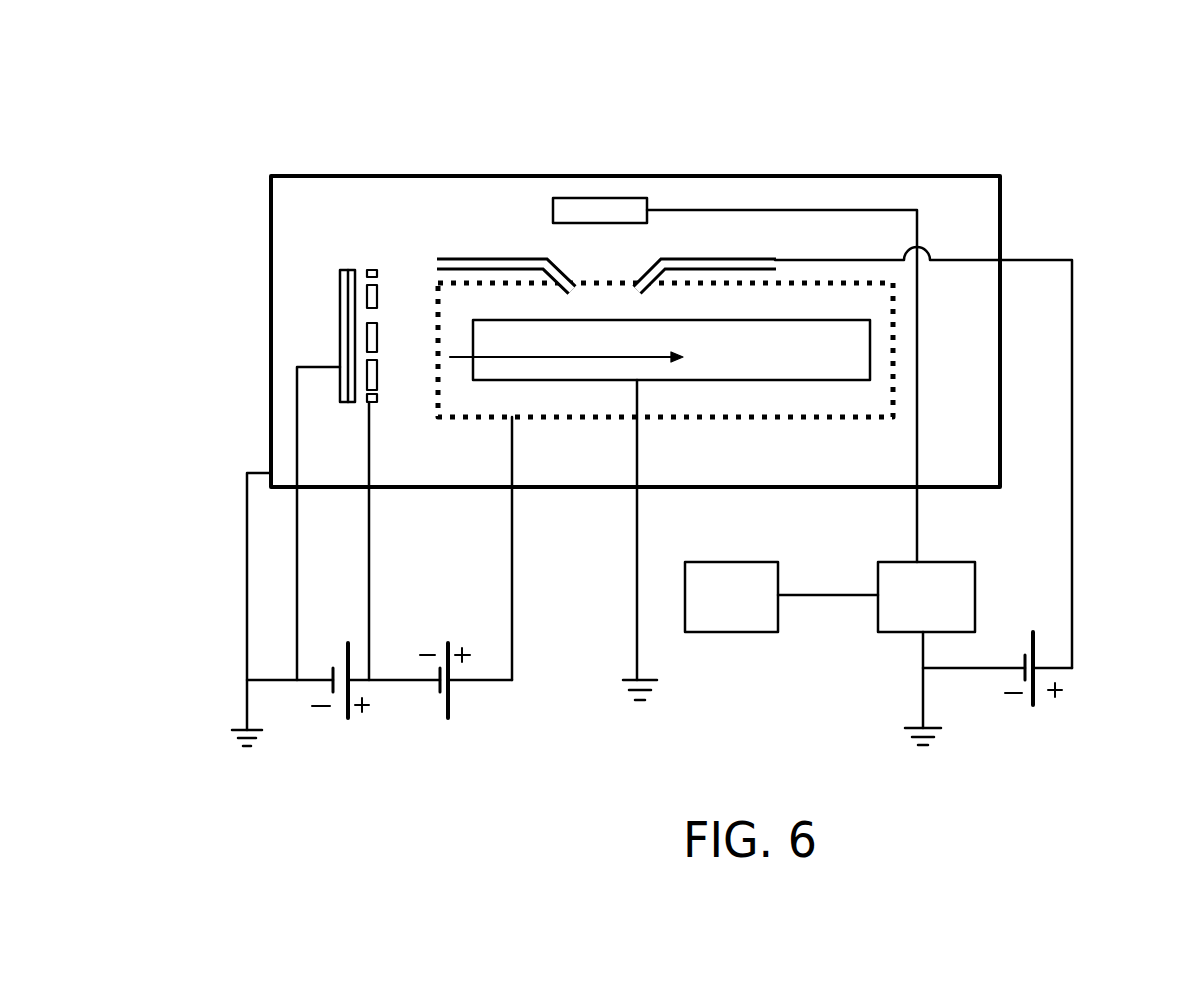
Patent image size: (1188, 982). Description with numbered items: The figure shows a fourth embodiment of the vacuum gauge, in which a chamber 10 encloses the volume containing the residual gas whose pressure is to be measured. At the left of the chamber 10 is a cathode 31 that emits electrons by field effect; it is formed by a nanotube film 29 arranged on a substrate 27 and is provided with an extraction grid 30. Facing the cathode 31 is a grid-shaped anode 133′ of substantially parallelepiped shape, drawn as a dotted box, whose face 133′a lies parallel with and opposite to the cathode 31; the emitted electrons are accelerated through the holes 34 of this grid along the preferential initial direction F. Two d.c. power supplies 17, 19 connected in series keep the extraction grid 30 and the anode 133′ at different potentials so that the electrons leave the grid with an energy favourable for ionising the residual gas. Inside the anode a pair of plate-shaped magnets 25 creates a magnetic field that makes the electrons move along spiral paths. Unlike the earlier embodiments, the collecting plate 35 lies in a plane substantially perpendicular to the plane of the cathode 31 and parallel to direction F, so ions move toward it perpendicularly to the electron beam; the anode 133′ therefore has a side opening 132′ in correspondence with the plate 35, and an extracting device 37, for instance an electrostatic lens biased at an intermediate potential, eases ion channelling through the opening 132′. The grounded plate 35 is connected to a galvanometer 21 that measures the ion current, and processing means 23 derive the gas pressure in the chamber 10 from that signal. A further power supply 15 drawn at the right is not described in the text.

The chamber 10 is at (1000, 176).
The collecting plate 35 is at (587, 198).
The cathode 31 is at (338, 256).
The substrate 27 is at (340, 322).
The nanotube film 29 is at (362, 271).
The extraction grid 30 is at (378, 290).
The holes 34 is at (438, 297).
The side opening 132′ is at (626, 298).
The magnets 25 is at (759, 362).
The extracting device 37 is at (752, 272).
The face of the accelerating grid 133′a is at (449, 392).
The grid-shaped anode 133′ is at (687, 420).
The d.c. power supply 17 is at (350, 730).
The d.c. power supply 19 is at (477, 695).
The processing means 23 is at (750, 612).
The galvanometer 21 is at (944, 612).
The deflection power supply 15 is at (1040, 708).